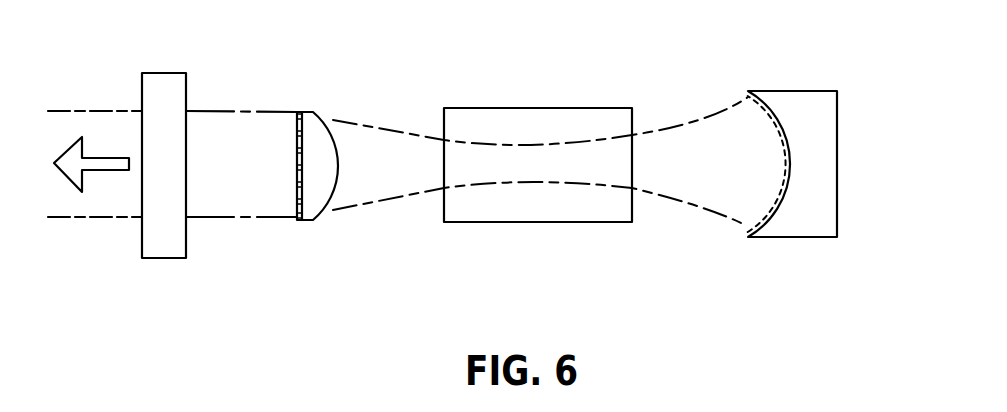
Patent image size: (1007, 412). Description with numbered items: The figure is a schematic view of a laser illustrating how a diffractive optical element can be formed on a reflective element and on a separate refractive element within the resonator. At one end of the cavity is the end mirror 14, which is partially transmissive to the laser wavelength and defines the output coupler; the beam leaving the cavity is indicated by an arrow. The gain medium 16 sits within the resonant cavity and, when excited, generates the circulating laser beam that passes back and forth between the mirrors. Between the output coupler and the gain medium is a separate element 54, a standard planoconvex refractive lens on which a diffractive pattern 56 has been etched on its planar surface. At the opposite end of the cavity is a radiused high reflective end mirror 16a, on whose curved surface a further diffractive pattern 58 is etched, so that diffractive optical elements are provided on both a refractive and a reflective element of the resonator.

The end mirror 14 is at (165, 77).
The gain medium 16 is at (550, 107).
The concave end mirror 16a is at (795, 233).
The separate element 54 is at (313, 108).
The diffractive pattern 56 is at (297, 198).
The diffractive pattern 58 is at (752, 223).